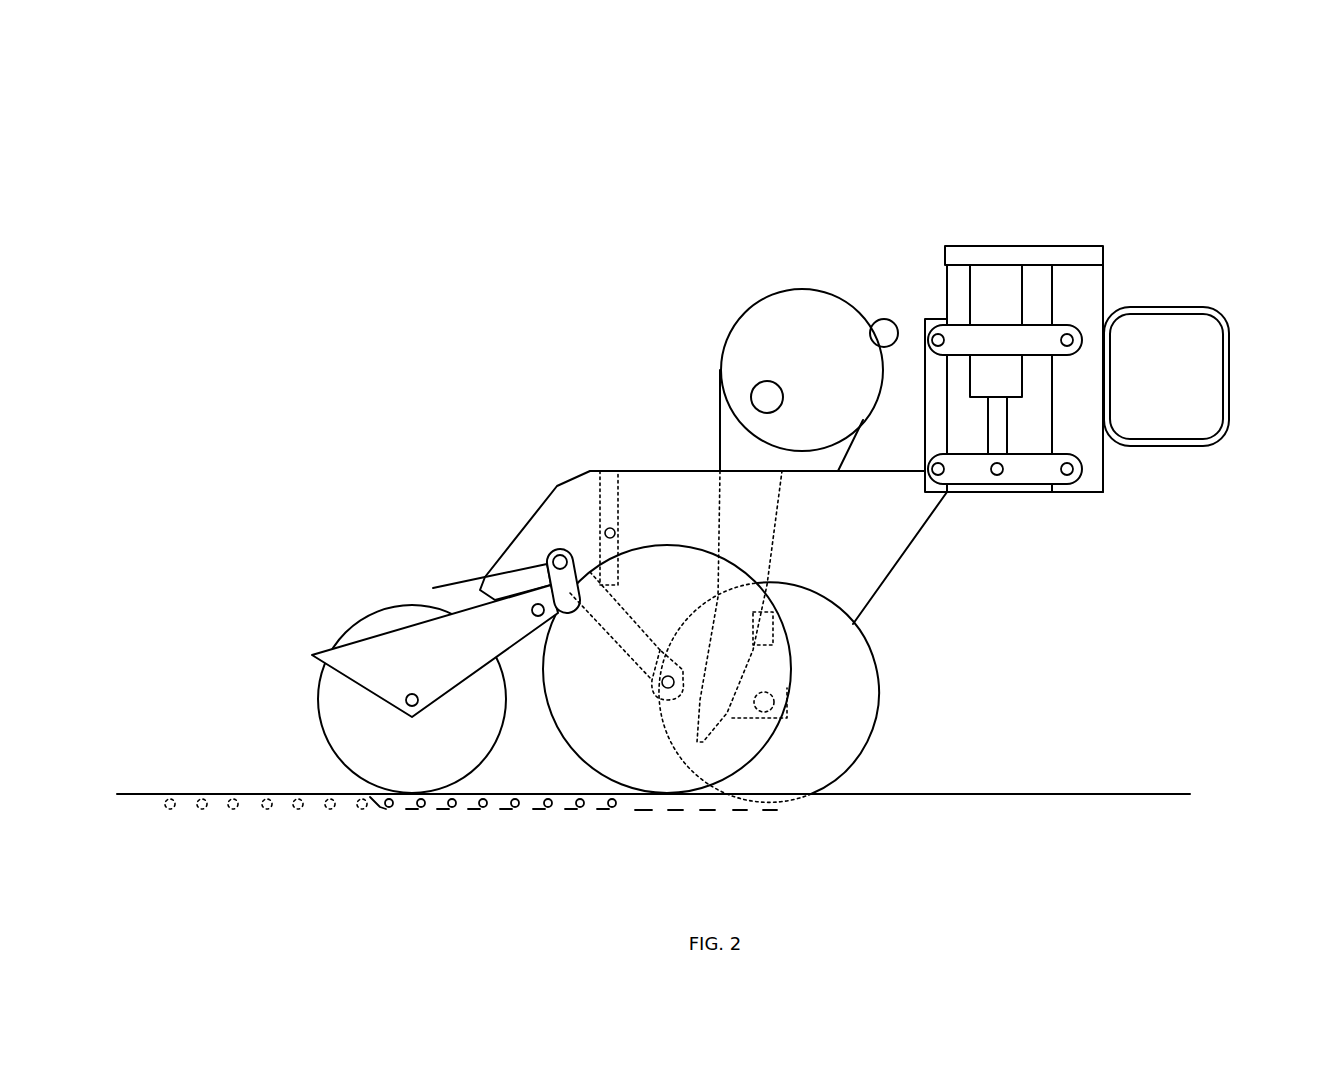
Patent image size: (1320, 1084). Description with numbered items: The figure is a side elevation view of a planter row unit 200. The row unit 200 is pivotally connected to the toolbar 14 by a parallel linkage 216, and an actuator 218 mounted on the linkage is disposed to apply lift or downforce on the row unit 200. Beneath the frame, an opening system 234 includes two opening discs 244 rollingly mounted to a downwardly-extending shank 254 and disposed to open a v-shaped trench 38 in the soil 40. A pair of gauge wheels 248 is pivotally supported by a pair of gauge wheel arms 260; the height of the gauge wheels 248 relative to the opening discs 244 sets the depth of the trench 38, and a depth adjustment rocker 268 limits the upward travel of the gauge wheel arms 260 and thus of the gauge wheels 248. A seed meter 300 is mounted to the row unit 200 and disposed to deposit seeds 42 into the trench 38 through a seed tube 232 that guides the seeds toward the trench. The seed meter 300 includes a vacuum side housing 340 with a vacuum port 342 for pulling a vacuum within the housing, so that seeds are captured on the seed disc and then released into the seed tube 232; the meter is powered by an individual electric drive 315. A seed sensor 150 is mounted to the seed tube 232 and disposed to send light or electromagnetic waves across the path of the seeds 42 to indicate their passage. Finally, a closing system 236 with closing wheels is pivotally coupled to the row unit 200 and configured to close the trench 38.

The toolbar 14 is at (1232, 388).
The trench 38 is at (663, 810).
The soil 40 is at (1077, 794).
The seeds 42 is at (572, 814).
The seed sensor 150 is at (773, 630).
The row unit 200 is at (985, 158).
The parallel linkage 216 is at (1025, 404).
The actuator 218 is at (996, 359).
The seed tube 232 is at (739, 606).
The opening system 234 is at (849, 647).
The closing system 236 is at (471, 664).
The opening discs 244 is at (769, 692).
The gauge wheels 248 is at (667, 669).
The shank 254 is at (907, 552).
The gauge wheel arms 260 is at (433, 588).
The depth adjustment rocker 268 is at (600, 514).
The seed meter 300 is at (811, 312).
The electric drive 315 is at (899, 318).
The vacuum side housing 340 is at (802, 370).
The vacuum port 342 is at (784, 393).